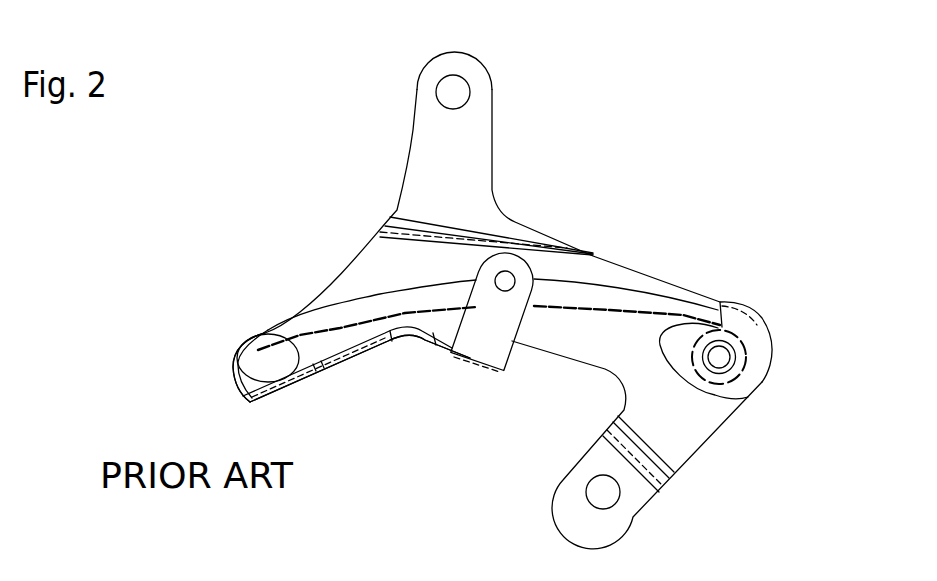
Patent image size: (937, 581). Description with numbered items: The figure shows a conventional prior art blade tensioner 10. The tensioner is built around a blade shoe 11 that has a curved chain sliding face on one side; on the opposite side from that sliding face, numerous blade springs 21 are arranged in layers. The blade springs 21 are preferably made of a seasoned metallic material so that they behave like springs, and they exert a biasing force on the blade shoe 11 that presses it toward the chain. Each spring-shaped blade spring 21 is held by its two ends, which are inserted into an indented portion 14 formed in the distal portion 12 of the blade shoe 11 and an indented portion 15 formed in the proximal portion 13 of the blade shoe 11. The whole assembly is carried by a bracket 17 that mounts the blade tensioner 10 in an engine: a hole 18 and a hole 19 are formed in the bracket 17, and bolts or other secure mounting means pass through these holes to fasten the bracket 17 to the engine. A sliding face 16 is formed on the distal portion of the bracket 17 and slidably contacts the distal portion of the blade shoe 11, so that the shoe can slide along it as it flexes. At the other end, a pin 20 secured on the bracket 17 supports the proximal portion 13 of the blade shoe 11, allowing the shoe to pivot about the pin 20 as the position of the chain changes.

The blade tensioner 10 is at (721, 97).
The blade shoe 11 is at (350, 306).
The distal portion 12 is at (242, 367).
The proximal portion 13 is at (715, 390).
The indented portion 14 is at (262, 348).
The indented portion 15 is at (721, 327).
The sliding face 16 is at (279, 390).
The bracket 17 is at (693, 428).
The hole 18 is at (603, 490).
The hole 19 is at (455, 90).
The pin 20 is at (730, 357).
The blade springs 21 is at (627, 312).